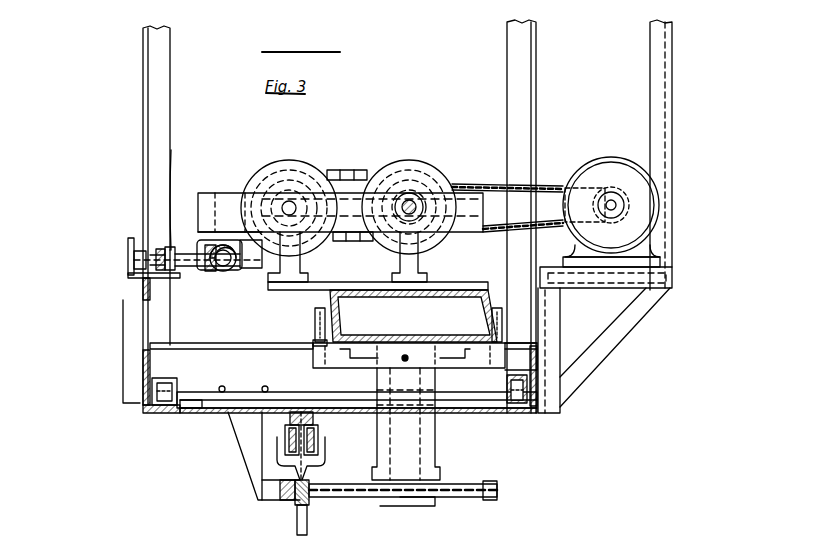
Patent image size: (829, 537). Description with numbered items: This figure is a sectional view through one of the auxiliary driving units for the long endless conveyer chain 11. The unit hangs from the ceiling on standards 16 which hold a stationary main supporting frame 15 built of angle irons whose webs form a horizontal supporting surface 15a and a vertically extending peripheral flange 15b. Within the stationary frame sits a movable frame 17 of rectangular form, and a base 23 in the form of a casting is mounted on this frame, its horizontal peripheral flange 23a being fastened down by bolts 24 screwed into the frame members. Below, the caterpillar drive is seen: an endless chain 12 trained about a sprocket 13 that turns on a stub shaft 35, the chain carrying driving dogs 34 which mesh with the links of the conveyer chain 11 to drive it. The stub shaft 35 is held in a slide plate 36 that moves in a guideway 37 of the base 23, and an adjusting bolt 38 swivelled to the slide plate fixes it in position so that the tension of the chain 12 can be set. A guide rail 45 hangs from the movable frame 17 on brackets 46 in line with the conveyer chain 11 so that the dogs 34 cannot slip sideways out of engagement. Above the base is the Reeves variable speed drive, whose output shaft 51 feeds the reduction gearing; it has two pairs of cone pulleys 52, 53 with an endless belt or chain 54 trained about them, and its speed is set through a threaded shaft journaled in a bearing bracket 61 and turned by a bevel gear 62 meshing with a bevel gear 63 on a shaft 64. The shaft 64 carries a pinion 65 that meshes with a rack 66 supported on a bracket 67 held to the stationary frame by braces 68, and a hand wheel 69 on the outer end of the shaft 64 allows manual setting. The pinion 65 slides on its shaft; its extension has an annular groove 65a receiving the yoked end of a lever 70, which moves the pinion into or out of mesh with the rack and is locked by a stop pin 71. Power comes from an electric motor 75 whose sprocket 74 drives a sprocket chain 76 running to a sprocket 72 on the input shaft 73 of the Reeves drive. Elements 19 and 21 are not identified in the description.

The endless conveyer chain 11 is at (296, 503).
The endless chain 12 is at (328, 482).
The sprocket 13 is at (480, 500).
The main supporting frame 15 is at (205, 413).
The horizontal supporting surface 15a is at (182, 414).
The vertically extending peripheral flange 15b is at (140, 407).
The standards 16 is at (143, 96).
The movable frame 17 is at (220, 343).
The bolt 19 is at (518, 404).
The block 21 is at (177, 385).
The base 23 is at (396, 298).
The horizontal peripheral flange 23a is at (315, 341).
The bolts 24 is at (315, 309).
The driving dogs 34 is at (311, 503).
The stub shaft 35 is at (437, 446).
The slide plate 36 is at (438, 353).
The guideway 37 is at (362, 356).
The adjusting bolt 38 is at (402, 360).
The guide rail 45 is at (280, 497).
The brackets 46 is at (230, 472).
The output shaft 51 is at (413, 203).
The cone pulleys 52 is at (407, 160).
The cone pulleys 53 is at (290, 160).
The endless belt or chain 54 is at (352, 170).
The bearing bracket 61 is at (236, 193).
The bevel gear 62 is at (226, 271).
The bevel gear 63 is at (210, 271).
The shaft 64 is at (168, 246).
The pinion 65 is at (170, 240).
The annular groove 65a is at (170, 180).
The rack 66 is at (147, 322).
The bracket 67 is at (143, 285).
The braces 68 is at (123, 357).
The hand wheel 69 is at (128, 246).
The lever 70 is at (130, 274).
The stop pin 71 is at (133, 266).
The sprocket 72 is at (372, 208).
The input shaft 73 is at (291, 203).
The sprocket 74 is at (604, 206).
The electric motor 75 is at (610, 165).
The sprocket chain 76 is at (496, 185).